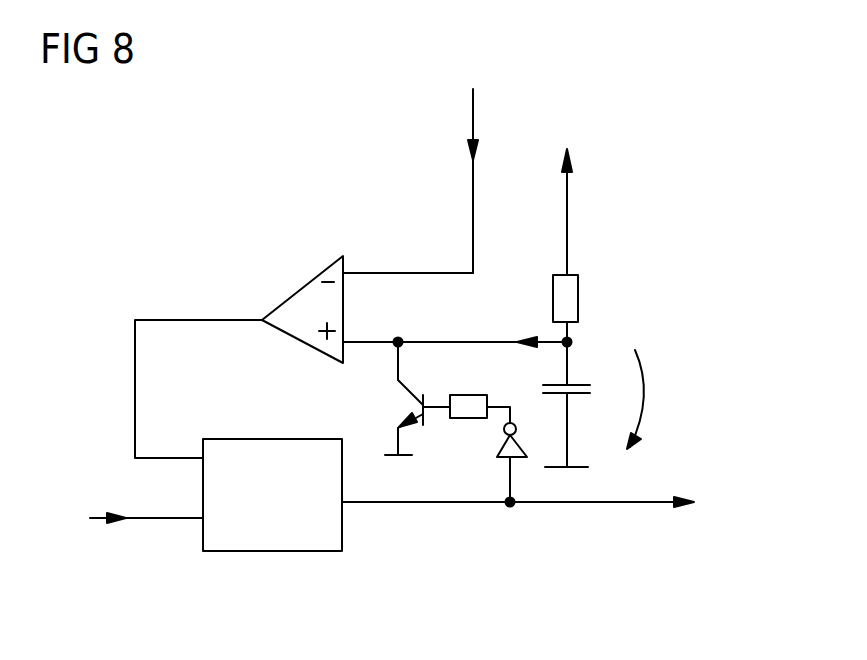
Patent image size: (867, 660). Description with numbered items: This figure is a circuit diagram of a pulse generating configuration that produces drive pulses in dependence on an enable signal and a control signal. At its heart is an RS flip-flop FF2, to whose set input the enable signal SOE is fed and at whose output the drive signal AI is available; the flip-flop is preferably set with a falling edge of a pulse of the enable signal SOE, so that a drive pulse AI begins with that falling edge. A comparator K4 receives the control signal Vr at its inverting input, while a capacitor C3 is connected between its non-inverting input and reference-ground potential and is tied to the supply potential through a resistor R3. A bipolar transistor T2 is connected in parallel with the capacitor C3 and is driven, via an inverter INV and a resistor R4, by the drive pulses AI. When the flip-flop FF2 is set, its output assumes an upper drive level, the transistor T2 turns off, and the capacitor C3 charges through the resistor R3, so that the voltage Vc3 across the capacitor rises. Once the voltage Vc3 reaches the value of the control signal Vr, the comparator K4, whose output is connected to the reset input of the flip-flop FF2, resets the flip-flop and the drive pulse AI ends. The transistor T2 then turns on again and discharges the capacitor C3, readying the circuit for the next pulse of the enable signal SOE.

The control signal Vr is at (428, 181).
The comparator K4 is at (351, 357).
The RS flip-flop FF2 is at (272, 479).
The enable signal SOE is at (134, 533).
The drive signal AI is at (531, 486).
The bipolar transistor T2 is at (391, 398).
The resistor R4 is at (466, 392).
The inverter INV is at (487, 462).
The resistor R3 is at (590, 245).
The capacitor C3 is at (585, 404).
The capacitor voltage Vc3 is at (673, 399).